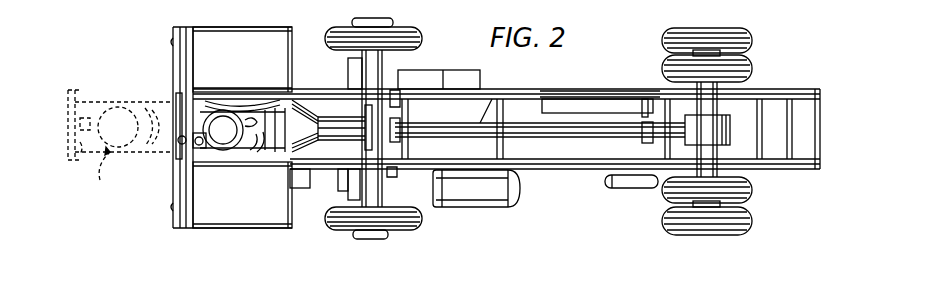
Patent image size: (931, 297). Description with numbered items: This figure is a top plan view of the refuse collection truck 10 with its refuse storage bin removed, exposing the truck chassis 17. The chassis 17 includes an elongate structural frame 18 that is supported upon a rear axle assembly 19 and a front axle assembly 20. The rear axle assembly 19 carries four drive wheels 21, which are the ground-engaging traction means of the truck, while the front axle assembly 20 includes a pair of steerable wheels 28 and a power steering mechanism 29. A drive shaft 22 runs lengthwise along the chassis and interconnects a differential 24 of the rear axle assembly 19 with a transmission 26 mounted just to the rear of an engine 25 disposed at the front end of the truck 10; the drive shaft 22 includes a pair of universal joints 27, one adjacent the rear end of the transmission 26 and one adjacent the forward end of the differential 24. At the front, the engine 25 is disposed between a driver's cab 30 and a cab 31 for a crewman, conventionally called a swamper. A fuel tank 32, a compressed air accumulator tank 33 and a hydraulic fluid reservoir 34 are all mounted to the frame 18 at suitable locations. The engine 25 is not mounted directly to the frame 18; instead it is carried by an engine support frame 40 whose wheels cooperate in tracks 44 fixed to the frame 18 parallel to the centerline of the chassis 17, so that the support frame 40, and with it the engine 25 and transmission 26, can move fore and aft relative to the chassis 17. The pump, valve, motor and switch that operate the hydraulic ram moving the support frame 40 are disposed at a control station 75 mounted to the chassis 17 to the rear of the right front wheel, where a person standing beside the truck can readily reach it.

The refuse collection truck 10 is at (133, 43).
The truck chassis 17 is at (799, 88).
The structural frame 18 is at (542, 91).
The rear axle assembly 19 is at (735, 235).
The front axle assembly 20 is at (380, 240).
The drive wheels 21 is at (752, 65).
The drive shaft 22 is at (590, 138).
The differential 24 is at (730, 118).
The engine 25 is at (212, 146).
The transmission 26 is at (312, 108).
The universal joints 27 is at (655, 143).
The steerable wheels 28 is at (420, 32).
The power steering mechanism 29 is at (352, 188).
The driver's cab 30 is at (201, 231).
The crewman cab 31 is at (224, 48).
The fuel tank 32 is at (498, 207).
The compressed air accumulator tank 33 is at (580, 95).
The hydraulic fluid reservoir 34 is at (620, 188).
The engine support frame 40 is at (332, 98).
The tracks 44 is at (390, 92).
The control station 75 is at (480, 70).